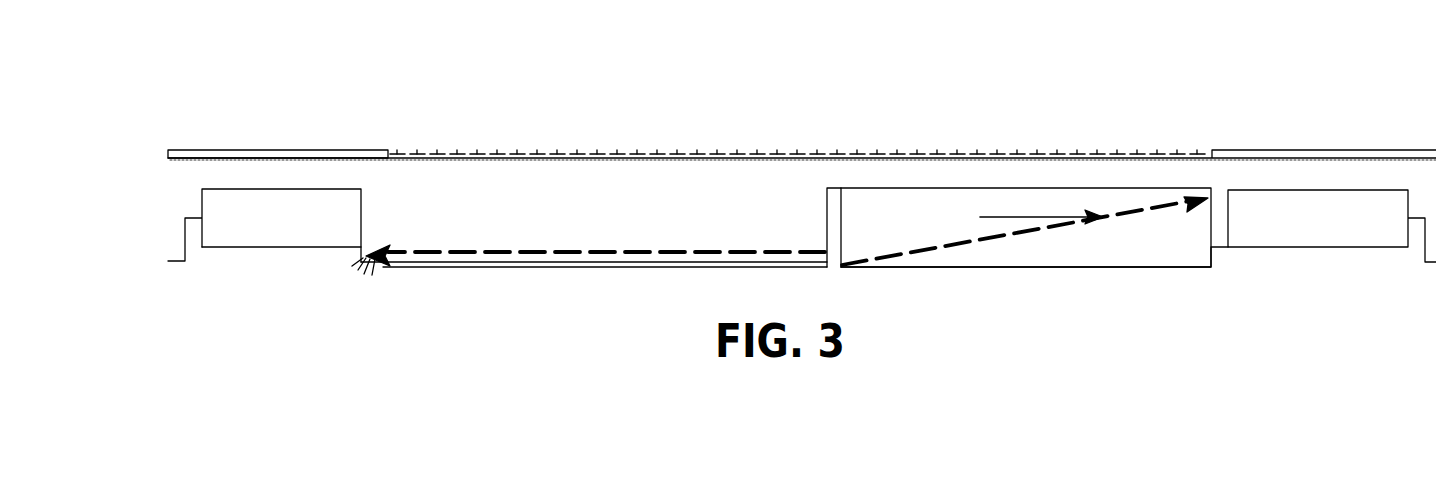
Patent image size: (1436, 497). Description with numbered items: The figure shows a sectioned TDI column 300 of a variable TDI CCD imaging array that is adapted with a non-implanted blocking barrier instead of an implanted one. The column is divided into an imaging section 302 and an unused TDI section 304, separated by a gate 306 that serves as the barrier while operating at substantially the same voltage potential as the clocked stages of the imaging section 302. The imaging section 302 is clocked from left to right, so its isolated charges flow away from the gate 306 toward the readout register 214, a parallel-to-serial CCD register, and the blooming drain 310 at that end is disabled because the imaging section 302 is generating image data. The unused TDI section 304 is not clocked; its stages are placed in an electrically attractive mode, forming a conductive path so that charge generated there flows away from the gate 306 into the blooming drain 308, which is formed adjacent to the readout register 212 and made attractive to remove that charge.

The TDI column 300 is at (802, 63).
The imaging section 302 is at (1108, 185).
The unused TDI section 304 is at (688, 217).
The gate 306 is at (833, 187).
The blooming drain 308 is at (368, 268).
The blooming drain 310 is at (1207, 267).
The readout register 212 is at (262, 243).
The readout register 214 is at (1333, 238).